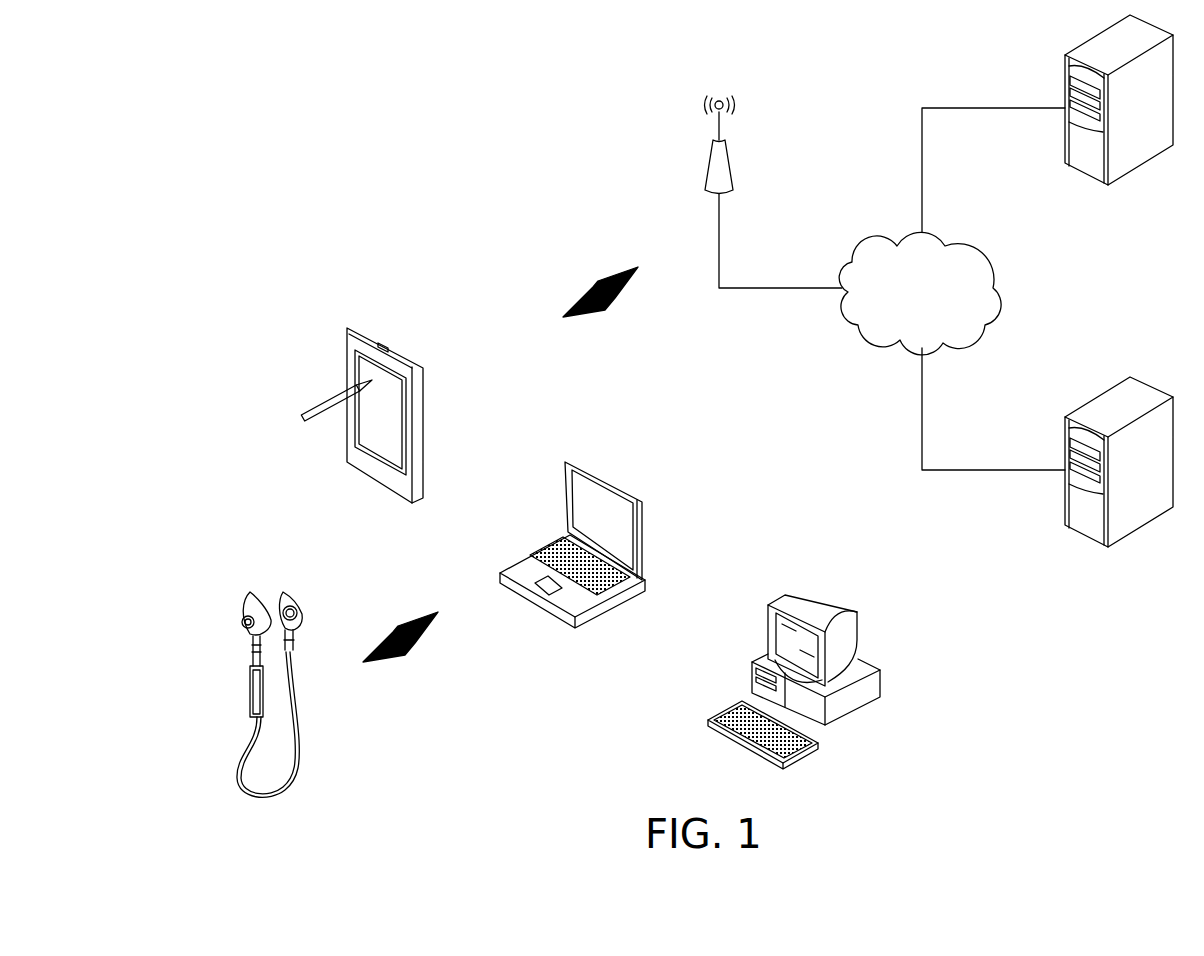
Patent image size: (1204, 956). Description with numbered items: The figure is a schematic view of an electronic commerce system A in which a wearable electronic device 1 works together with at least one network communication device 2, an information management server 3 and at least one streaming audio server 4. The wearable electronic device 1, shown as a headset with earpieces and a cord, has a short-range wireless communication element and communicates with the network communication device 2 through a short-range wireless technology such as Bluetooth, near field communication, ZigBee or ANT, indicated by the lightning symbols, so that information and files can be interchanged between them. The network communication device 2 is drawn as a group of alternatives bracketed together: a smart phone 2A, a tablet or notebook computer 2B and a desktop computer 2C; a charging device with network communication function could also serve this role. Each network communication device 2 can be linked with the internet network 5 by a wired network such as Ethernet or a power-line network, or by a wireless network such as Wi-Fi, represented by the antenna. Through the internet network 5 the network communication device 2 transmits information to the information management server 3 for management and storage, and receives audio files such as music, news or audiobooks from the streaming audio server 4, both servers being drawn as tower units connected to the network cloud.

The electronic commerce system A is at (283, 138).
The wearable electronic device 1 is at (254, 699).
The network communication device 2 is at (955, 634).
The smart phone 2A is at (398, 354).
The notebook computer 2B is at (617, 507).
The desktop computer 2C is at (795, 618).
The information management server 3 is at (1085, 525).
The streaming audio server 4 is at (1085, 163).
The internet network 5 is at (878, 262).